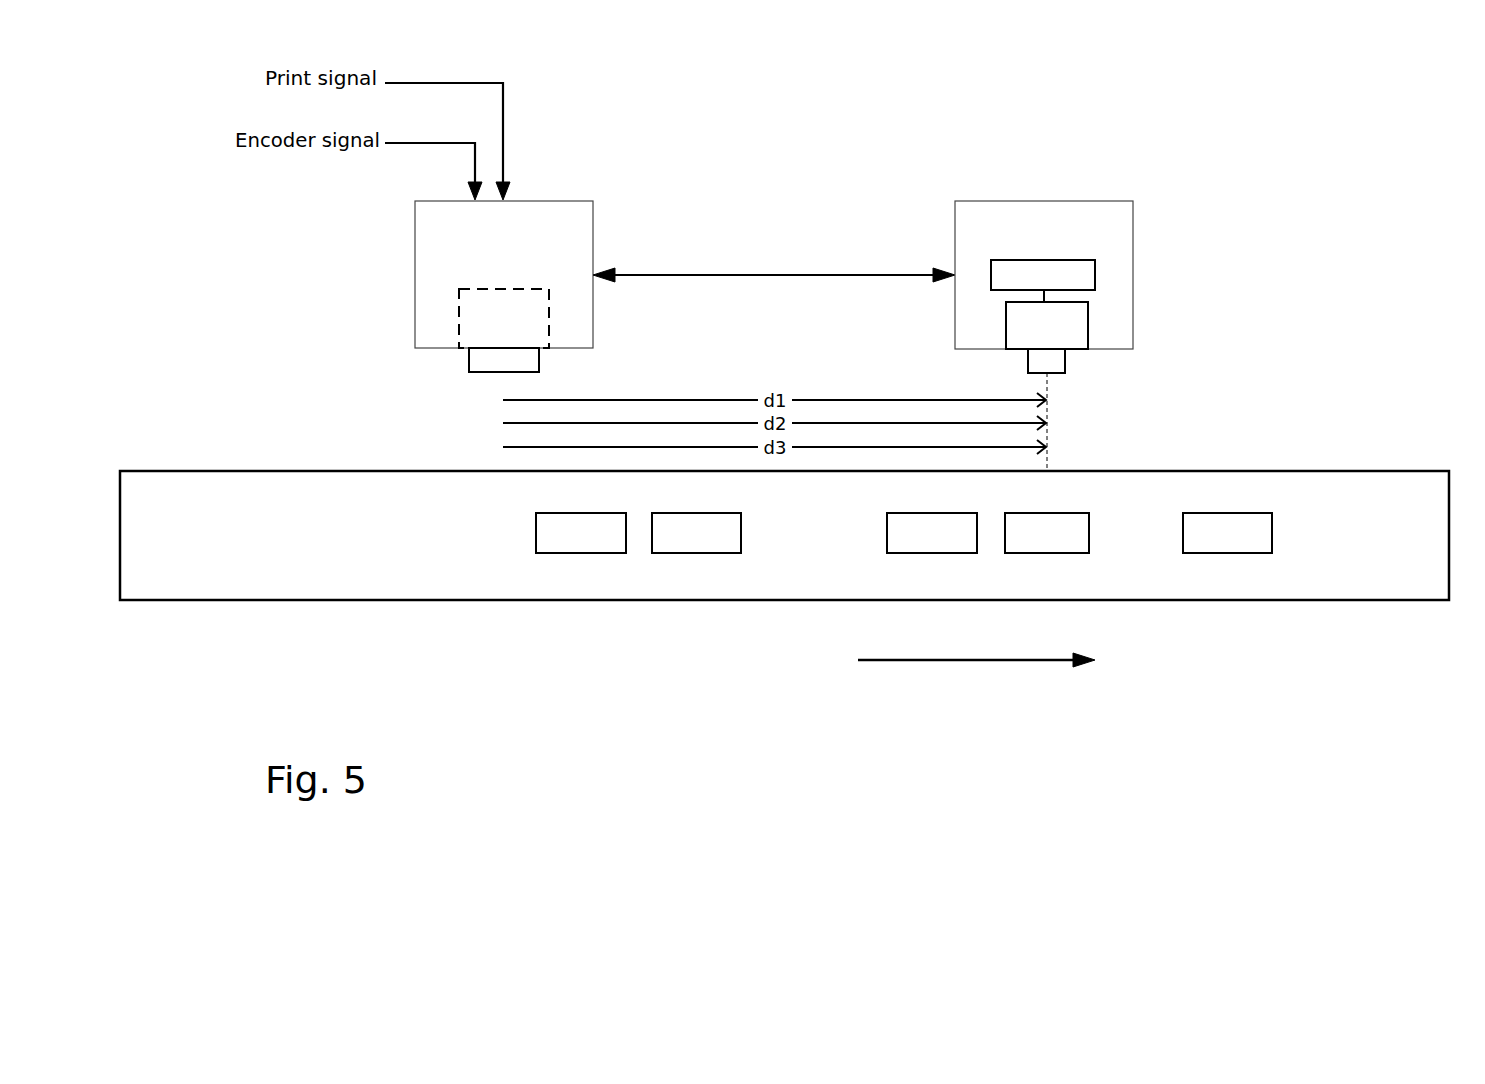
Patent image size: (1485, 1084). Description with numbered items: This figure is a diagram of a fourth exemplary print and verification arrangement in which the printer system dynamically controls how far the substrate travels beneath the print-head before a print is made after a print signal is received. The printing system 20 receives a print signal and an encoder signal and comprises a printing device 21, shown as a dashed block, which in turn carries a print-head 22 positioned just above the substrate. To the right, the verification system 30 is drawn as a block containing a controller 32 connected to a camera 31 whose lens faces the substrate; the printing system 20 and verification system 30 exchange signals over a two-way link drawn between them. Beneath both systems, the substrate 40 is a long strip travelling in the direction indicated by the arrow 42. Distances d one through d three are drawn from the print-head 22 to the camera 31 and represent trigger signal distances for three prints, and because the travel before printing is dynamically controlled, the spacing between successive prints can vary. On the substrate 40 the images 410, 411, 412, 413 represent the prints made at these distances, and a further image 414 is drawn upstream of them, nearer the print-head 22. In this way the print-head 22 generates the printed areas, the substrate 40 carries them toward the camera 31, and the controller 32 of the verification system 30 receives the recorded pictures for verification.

The printing system 20 is at (492, 262).
The printing device 21 is at (504, 318).
The print-head 22 is at (460, 360).
The verification system 30 is at (1032, 254).
The camera 31 is at (1047, 337).
The controller 32 is at (1043, 275).
The substrate 40 is at (1385, 470).
The arrow 42 is at (983, 662).
The image 410 is at (1227, 533).
The image 411 is at (1047, 533).
The image 412 is at (932, 533).
The image 413 is at (696, 533).
The printed pattern 414 is at (581, 533).